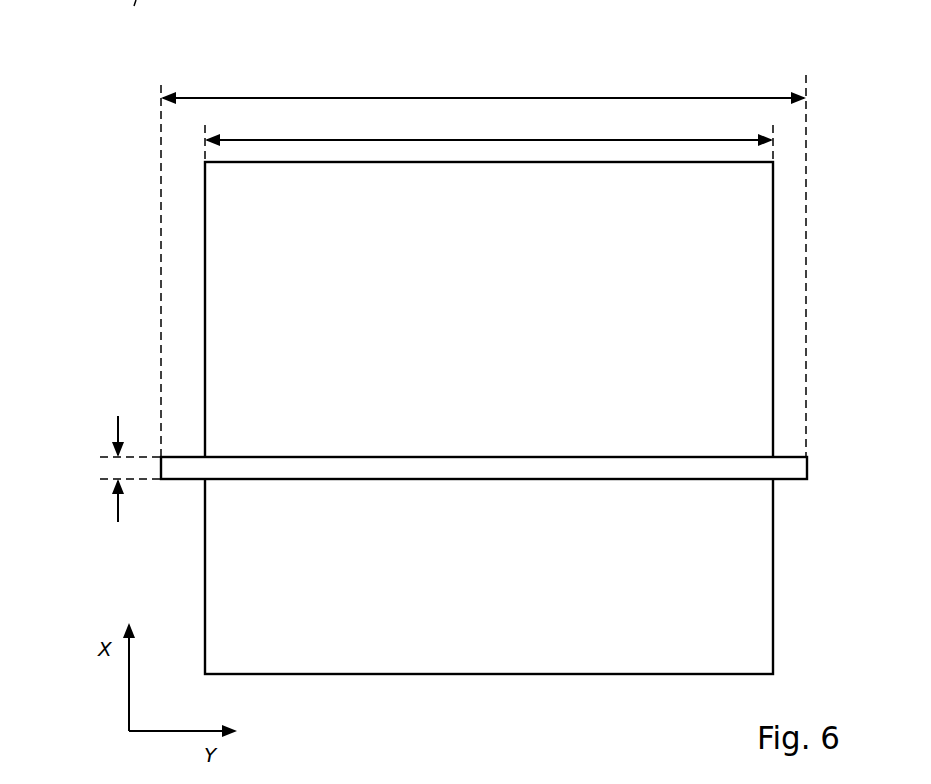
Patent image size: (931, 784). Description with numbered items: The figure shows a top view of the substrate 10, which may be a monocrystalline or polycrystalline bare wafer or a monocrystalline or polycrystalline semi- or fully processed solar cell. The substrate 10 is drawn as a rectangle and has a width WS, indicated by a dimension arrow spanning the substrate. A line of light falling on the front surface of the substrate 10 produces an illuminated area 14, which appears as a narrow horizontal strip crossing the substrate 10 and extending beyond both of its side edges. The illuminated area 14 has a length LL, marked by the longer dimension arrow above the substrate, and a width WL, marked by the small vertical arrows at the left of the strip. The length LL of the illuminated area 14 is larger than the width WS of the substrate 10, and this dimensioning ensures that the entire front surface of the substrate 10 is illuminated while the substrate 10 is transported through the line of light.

The substrate 10 is at (579, 308).
The illuminated area 14 is at (391, 470).
The length of the illuminated area LL is at (483, 65).
The width of the substrate WS is at (489, 92).
The width of the illuminated area WL is at (119, 443).